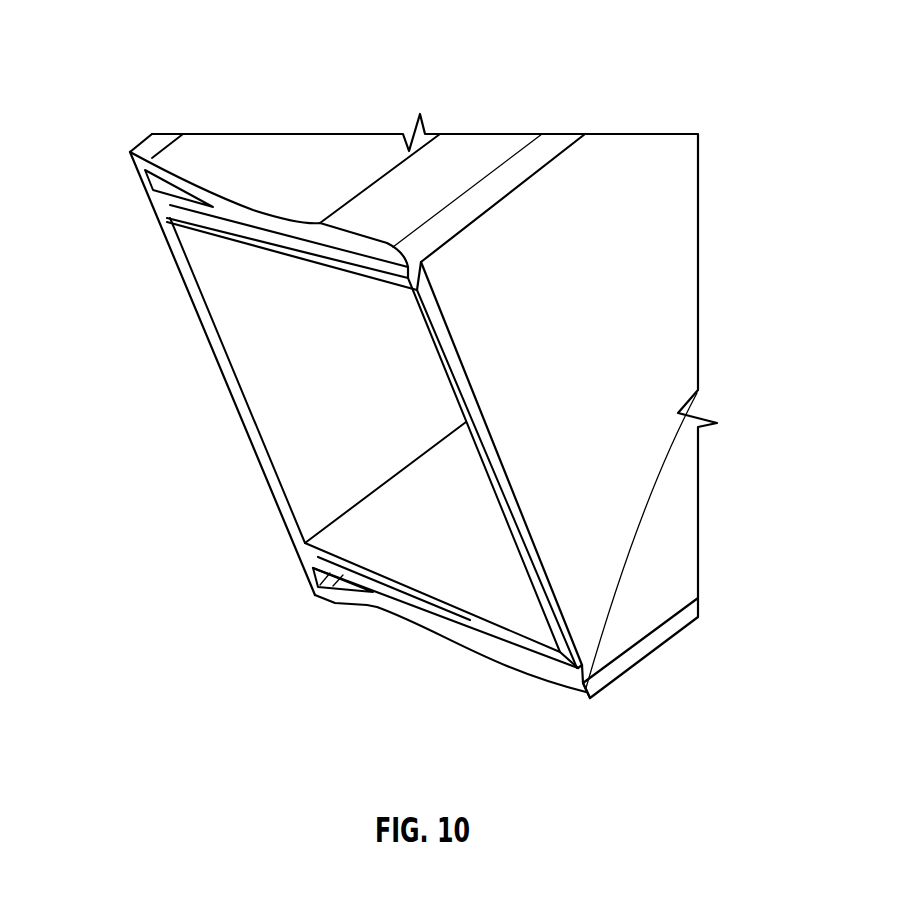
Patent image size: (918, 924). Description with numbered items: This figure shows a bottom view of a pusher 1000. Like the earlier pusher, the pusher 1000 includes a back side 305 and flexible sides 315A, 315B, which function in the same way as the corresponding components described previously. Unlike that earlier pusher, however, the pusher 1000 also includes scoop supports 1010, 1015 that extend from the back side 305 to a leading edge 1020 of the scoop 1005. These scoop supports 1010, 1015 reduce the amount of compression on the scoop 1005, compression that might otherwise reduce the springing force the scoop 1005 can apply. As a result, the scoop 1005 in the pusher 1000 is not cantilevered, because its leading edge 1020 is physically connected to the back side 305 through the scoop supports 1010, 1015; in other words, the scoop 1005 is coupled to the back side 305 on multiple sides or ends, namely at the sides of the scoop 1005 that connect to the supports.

The pusher 1000 is at (196, 76).
The scoop 1005 is at (645, 352).
The back side 305 is at (168, 255).
The flexible side 315A is at (467, 167).
The flexible side 315B is at (552, 684).
The scoop support 1010 is at (317, 262).
The scoop support 1015 is at (433, 605).
The leading edge 1020 is at (565, 622).